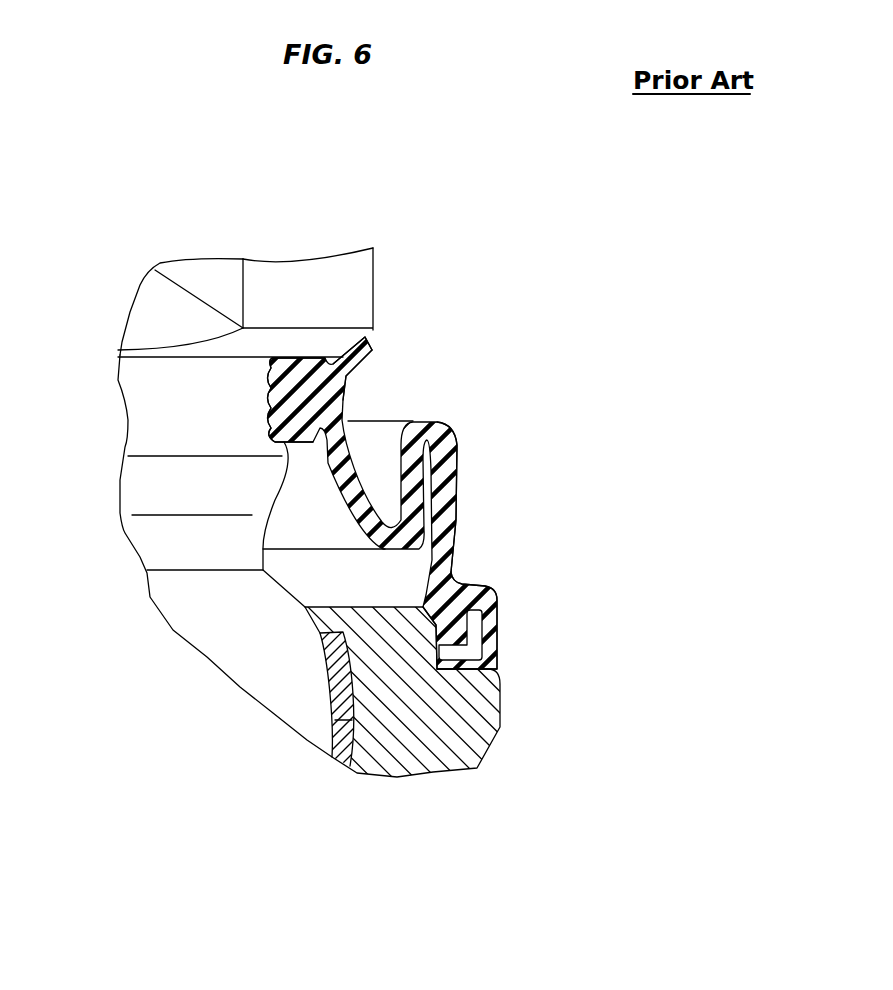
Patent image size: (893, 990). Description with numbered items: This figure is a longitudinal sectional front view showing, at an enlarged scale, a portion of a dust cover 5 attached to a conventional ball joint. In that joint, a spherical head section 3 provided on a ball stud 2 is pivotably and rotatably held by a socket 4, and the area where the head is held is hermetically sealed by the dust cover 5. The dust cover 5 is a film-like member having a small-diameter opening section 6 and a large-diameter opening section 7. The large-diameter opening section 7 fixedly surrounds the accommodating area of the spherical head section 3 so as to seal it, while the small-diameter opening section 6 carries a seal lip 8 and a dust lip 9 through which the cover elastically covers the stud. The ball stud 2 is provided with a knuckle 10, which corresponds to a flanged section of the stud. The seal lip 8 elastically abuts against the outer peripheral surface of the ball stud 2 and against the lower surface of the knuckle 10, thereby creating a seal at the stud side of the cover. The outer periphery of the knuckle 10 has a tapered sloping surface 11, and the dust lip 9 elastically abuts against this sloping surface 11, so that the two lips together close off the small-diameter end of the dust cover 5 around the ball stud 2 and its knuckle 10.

The ball stud 2 is at (140, 410).
The spherical head section 3 is at (392, 777).
The socket 4 is at (497, 738).
The dust cover 5 is at (465, 500).
The small-diameter opening section 6 is at (380, 392).
The large-diameter opening section 7 is at (511, 654).
The seal lip 8 is at (268, 400).
The dust lip 9 is at (370, 356).
The knuckle 10 is at (375, 260).
The sloping surface 11 is at (340, 341).